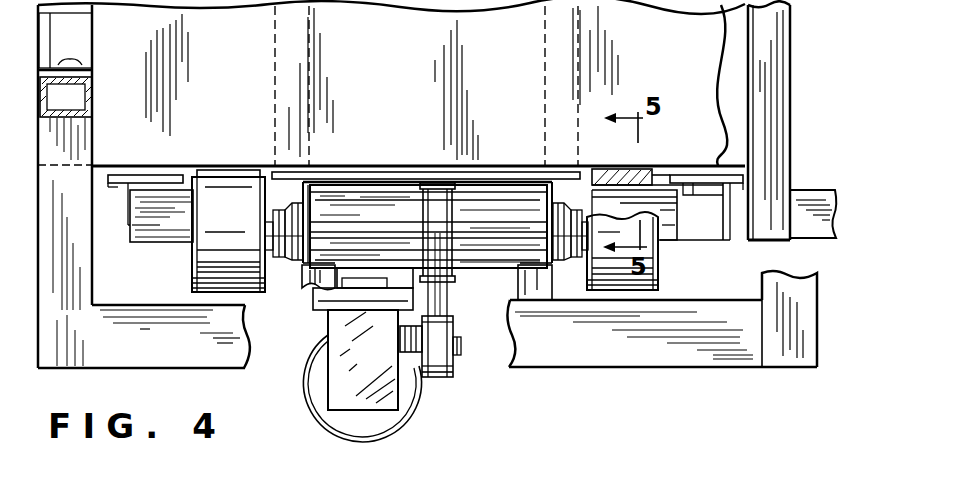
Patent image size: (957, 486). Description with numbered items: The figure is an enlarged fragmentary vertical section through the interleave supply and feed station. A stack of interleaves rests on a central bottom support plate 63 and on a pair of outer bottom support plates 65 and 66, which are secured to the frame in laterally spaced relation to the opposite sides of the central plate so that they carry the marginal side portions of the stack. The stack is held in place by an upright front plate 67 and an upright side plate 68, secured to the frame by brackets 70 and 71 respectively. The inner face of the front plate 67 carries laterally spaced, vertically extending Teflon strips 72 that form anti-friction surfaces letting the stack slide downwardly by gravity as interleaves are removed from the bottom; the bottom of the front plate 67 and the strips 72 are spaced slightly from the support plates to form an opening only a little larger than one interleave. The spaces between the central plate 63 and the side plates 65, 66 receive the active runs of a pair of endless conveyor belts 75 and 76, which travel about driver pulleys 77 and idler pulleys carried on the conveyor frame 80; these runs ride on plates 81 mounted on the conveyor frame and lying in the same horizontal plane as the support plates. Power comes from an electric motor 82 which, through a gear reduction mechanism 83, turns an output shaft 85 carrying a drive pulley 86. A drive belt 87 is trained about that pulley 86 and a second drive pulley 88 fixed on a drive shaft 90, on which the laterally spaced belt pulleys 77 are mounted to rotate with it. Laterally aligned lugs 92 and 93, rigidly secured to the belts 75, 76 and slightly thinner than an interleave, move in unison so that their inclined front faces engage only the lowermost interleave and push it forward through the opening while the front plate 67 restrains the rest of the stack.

The bottom support plate 63 is at (378, 172).
The outer bottom support plate 65 is at (139, 175).
The outer bottom support plate 66 is at (710, 175).
The front plate 67 is at (440, 41).
The side plate 68 is at (740, 20).
The bracket 70 is at (86, 42).
The bracket 71 is at (778, 103).
The Teflon strips 72 is at (305, 65).
The endless conveyor belt 75 is at (643, 169).
The endless conveyor belt 76 is at (210, 292).
The driver pulley 77 is at (192, 257).
The conveyor frame 80 is at (292, 279).
The plate 81 is at (640, 182).
The electric motor 82 is at (390, 428).
The gear reduction mechanism 83 is at (335, 383).
The output shaft 85 is at (420, 384).
The drive pulley 86 is at (452, 370).
The drive belt 87 is at (443, 293).
The drive pulley 88 is at (455, 207).
The drive shaft 90 is at (342, 228).
The lug 92 is at (623, 169).
The lug 93 is at (217, 170).